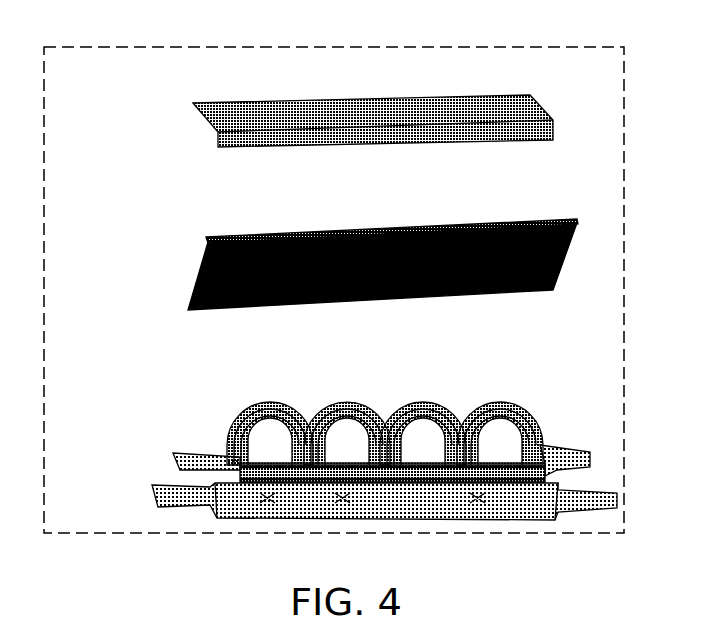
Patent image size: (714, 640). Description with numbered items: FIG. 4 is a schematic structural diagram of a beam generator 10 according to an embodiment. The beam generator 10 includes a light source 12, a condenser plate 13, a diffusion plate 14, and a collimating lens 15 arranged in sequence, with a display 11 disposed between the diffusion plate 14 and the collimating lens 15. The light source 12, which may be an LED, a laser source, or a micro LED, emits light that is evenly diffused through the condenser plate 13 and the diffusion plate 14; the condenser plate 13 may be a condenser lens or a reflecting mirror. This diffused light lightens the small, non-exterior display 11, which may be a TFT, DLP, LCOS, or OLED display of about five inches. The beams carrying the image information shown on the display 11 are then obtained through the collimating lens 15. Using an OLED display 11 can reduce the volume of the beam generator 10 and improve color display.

The beam generator 10 is at (158, 42).
The display 11 is at (203, 241).
The light source 12 is at (131, 489).
The condenser plate 13 is at (156, 432).
The diffusion plate 14 is at (196, 276).
The collimating lens 15 is at (188, 120).